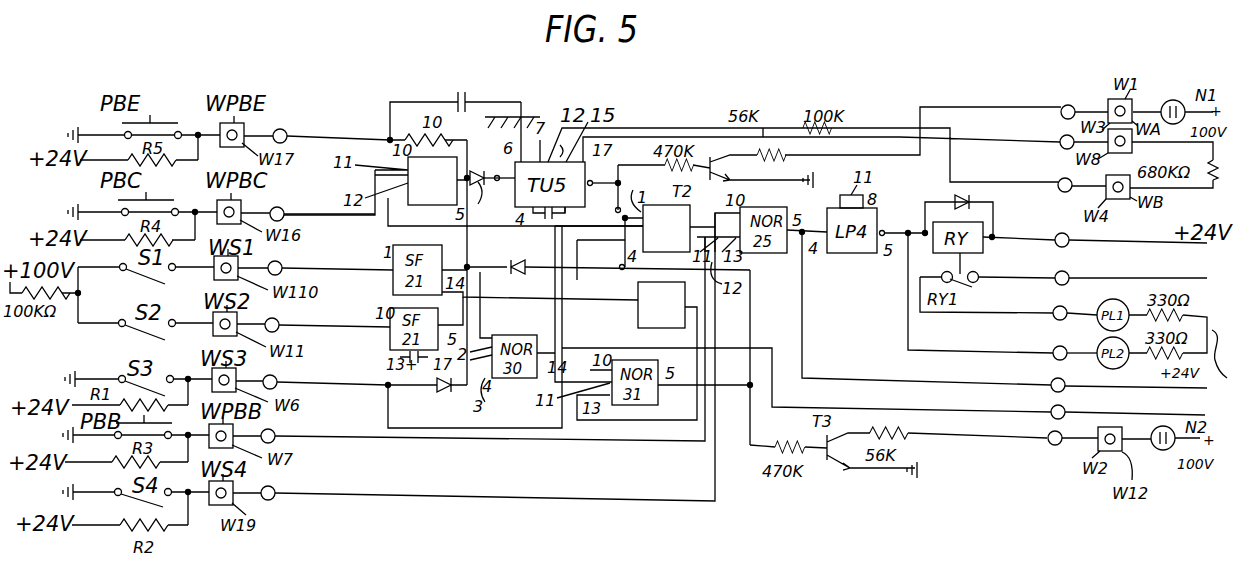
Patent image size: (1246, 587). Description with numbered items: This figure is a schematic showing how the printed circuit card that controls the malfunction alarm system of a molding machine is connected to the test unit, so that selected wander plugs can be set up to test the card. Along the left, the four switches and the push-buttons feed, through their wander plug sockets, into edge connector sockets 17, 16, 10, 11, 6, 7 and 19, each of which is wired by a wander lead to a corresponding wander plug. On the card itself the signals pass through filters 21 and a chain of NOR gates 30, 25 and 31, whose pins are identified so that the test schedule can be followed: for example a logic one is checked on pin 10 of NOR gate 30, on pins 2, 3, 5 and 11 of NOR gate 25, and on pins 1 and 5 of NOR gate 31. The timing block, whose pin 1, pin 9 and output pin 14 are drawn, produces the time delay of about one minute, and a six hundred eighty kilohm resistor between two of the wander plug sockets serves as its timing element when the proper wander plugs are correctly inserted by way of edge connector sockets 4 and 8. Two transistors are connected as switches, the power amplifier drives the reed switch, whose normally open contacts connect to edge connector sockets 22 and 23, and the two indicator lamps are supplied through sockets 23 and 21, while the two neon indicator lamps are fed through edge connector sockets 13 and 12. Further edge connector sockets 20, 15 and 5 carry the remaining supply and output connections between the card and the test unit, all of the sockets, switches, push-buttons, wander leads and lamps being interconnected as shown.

The input pin 1 is at (499, 190).
The input pin of NOR gate 25 2 is at (627, 189).
The input pin of NOR gate 25 3 is at (640, 228).
The pin of power amplifier LP4 4 is at (1073, 174).
The output pin 5 is at (1117, 404).
The terminal 6 is at (325, 375).
The terminal 7 is at (483, 340).
The terminal 8 is at (1075, 132).
The pin 9 of TU5 9 is at (570, 218).
The input pin 10 is at (330, 259).
The input pin of NOR gate 25 11 is at (327, 316).
The terminal 12 is at (1060, 430).
The terminal 13 is at (1073, 100).
The output pin 14 of TU5 14 is at (603, 195).
The terminal 15 is at (1115, 376).
The terminal 16 is at (322, 201).
The terminal 17 is at (331, 120).
The terminal 19 is at (488, 357).
The terminal 20 is at (1122, 225).
The filter 21 is at (1061, 343).
The terminal 22 is at (1115, 269).
The terminal 23 is at (1060, 304).
The NOR gate 25 is at (679, 228).
The NOR gate 30 is at (422, 189).
The NOR gate 31 is at (673, 305).